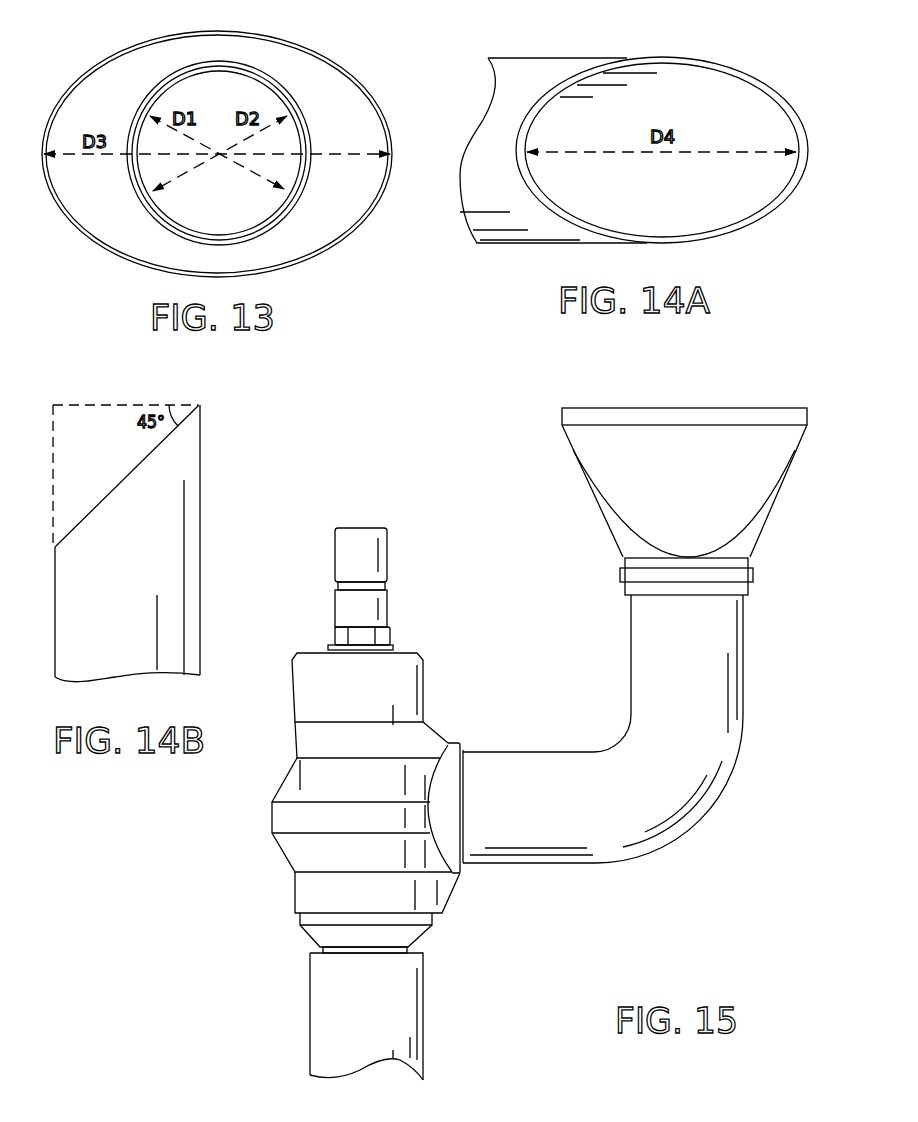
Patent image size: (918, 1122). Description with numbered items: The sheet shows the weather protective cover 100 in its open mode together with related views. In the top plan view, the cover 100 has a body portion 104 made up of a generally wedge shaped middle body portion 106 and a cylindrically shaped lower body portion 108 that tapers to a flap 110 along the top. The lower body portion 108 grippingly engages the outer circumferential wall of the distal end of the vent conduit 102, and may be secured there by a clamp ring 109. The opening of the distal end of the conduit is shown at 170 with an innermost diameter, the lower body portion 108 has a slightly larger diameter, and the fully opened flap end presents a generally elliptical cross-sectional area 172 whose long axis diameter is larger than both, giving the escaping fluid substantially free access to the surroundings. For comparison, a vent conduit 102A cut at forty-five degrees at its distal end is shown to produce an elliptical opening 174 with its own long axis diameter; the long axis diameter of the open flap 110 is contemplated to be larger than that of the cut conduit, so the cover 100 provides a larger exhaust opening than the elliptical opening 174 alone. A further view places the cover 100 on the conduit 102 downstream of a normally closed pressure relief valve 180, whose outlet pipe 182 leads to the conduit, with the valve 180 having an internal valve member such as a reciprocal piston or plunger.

In FIG. 13, the cover 100 is at (67, 79).
In FIG. 15, the cover 100 is at (543, 431).
In FIG. 13, the vent conduit 102 is at (298, 178).
In FIG. 15, the vent conduit 102 is at (640, 629).
In FIG. 14A, the vent conduit 102A is at (557, 58).
In FIG. 14B, the vent conduit 102A is at (200, 488).
In FIG. 15, the body portion 104 is at (747, 533).
In FIG. 13, the middle body portion 106 is at (109, 237).
In FIG. 15, the middle body portion 106 is at (593, 463).
In FIG. 13, the lower body portion 108 is at (298, 205).
In FIG. 15, the lower body portion 108 is at (743, 587).
In FIG. 15, the clamp ring 109 is at (620, 572).
In FIG. 13, the flap 110 is at (380, 100).
In FIG. 15, the flap 110 is at (732, 417).
In FIG. 13, the opening of the distal end of the conduit 170 is at (241, 208).
In FIG. 13, the elliptical cross-sectional area 172 is at (318, 74).
In FIG. 14A, the elliptical opening 174 is at (697, 90).
In FIG. 14B, the elliptical opening 174 is at (102, 485).
In FIG. 15, the pressure relief valve 180 is at (438, 578).
In FIG. 15, the outlet pipe 182 is at (318, 988).